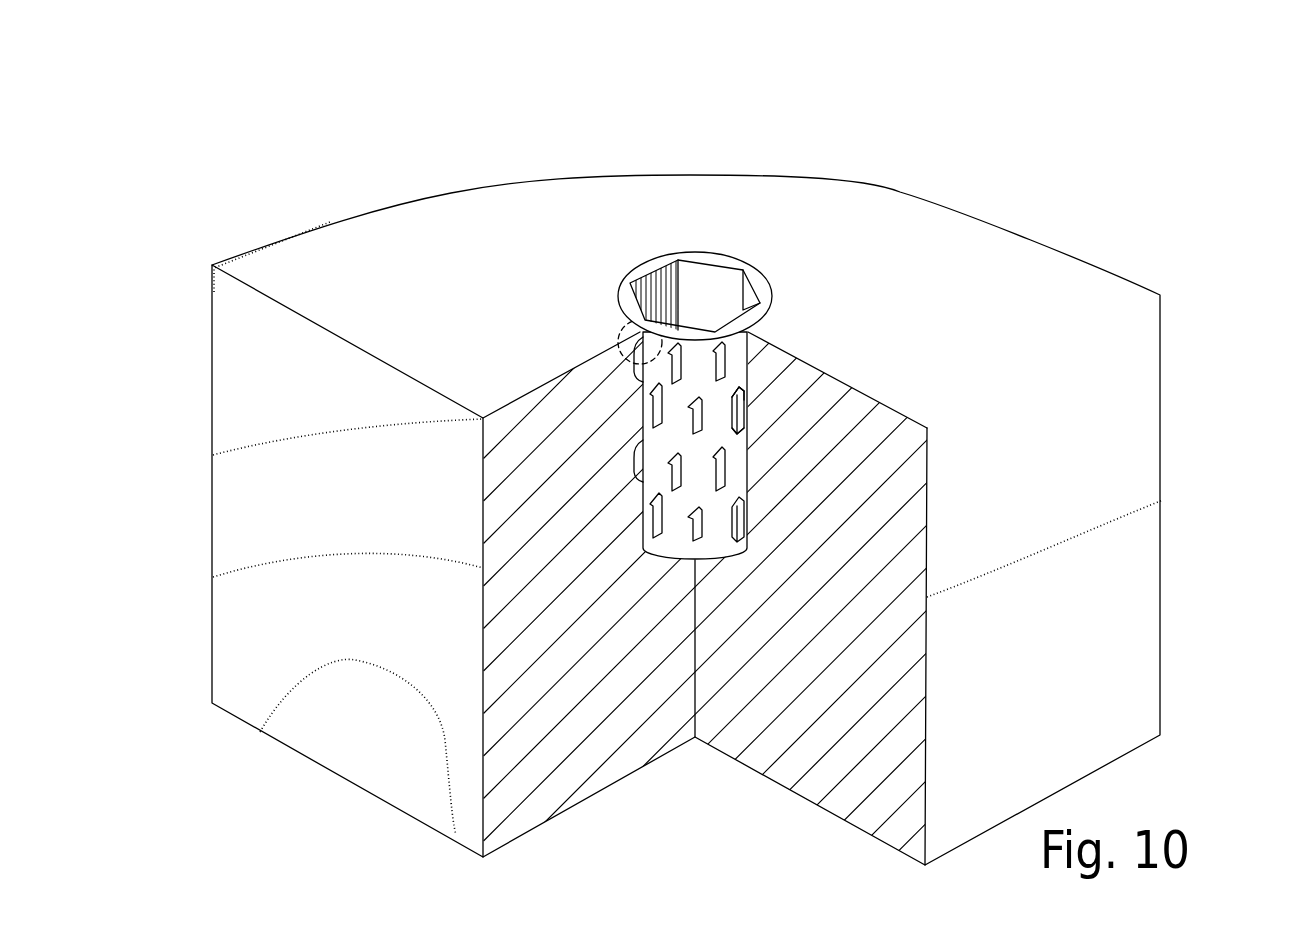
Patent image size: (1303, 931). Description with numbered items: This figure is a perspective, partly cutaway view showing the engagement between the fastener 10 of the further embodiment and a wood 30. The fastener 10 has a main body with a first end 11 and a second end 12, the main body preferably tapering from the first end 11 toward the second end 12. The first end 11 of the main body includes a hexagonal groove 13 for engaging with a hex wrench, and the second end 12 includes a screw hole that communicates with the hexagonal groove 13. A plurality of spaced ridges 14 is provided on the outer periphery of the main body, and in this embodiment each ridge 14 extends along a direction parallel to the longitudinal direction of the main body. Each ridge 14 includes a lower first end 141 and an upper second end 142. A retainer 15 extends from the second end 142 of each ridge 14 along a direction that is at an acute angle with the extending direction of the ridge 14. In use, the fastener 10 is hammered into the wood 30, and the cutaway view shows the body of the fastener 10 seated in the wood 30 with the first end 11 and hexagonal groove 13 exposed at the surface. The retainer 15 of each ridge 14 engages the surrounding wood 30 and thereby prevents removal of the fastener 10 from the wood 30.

The fastener 10 is at (787, 346).
The first end 11 is at (764, 289).
The second end 12 is at (710, 542).
The hexagonal groove 13 is at (710, 293).
The ridge 14 is at (750, 425).
The lower first end 141 is at (750, 450).
The upper second end 142 is at (750, 408).
The retainer 15 is at (750, 392).
The wood 30 is at (372, 775).